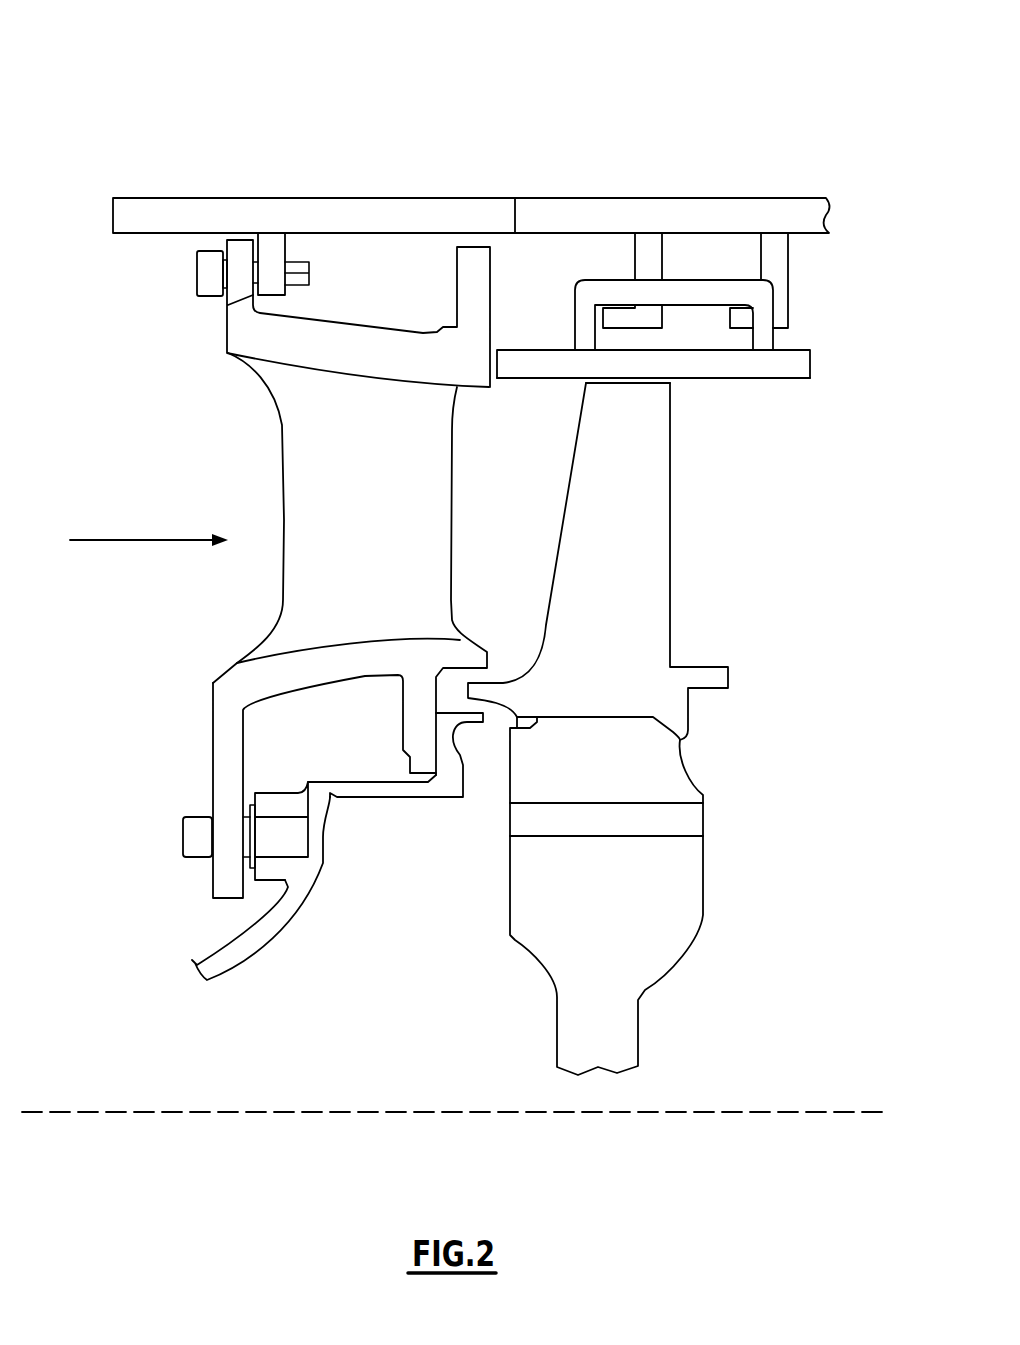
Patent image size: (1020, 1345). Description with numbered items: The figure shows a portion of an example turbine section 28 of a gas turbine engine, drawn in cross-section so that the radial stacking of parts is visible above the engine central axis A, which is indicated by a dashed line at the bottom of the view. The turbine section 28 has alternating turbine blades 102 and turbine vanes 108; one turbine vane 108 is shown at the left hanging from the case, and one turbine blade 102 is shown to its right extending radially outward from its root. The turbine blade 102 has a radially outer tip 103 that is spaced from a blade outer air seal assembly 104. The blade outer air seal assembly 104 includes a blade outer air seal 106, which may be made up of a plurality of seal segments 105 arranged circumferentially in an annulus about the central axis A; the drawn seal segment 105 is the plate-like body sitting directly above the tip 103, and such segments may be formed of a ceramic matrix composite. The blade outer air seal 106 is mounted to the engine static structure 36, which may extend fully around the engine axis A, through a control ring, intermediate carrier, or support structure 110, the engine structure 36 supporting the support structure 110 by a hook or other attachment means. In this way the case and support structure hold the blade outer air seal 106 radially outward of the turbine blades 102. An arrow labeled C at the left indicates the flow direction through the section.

The turbine section 28 is at (757, 80).
The engine static structure 36 is at (176, 215).
The support structure 110 is at (560, 210).
The turbine vane 108 is at (369, 348).
The blade outer air seal assembly 104 is at (826, 296).
The seal segment 105 is at (796, 372).
The blade outer air seal 106 is at (797, 382).
The turbine blade 102 is at (657, 503).
The radially outer tip 103 is at (652, 383).
The core flow path C is at (90, 530).
The central axis A is at (822, 1112).